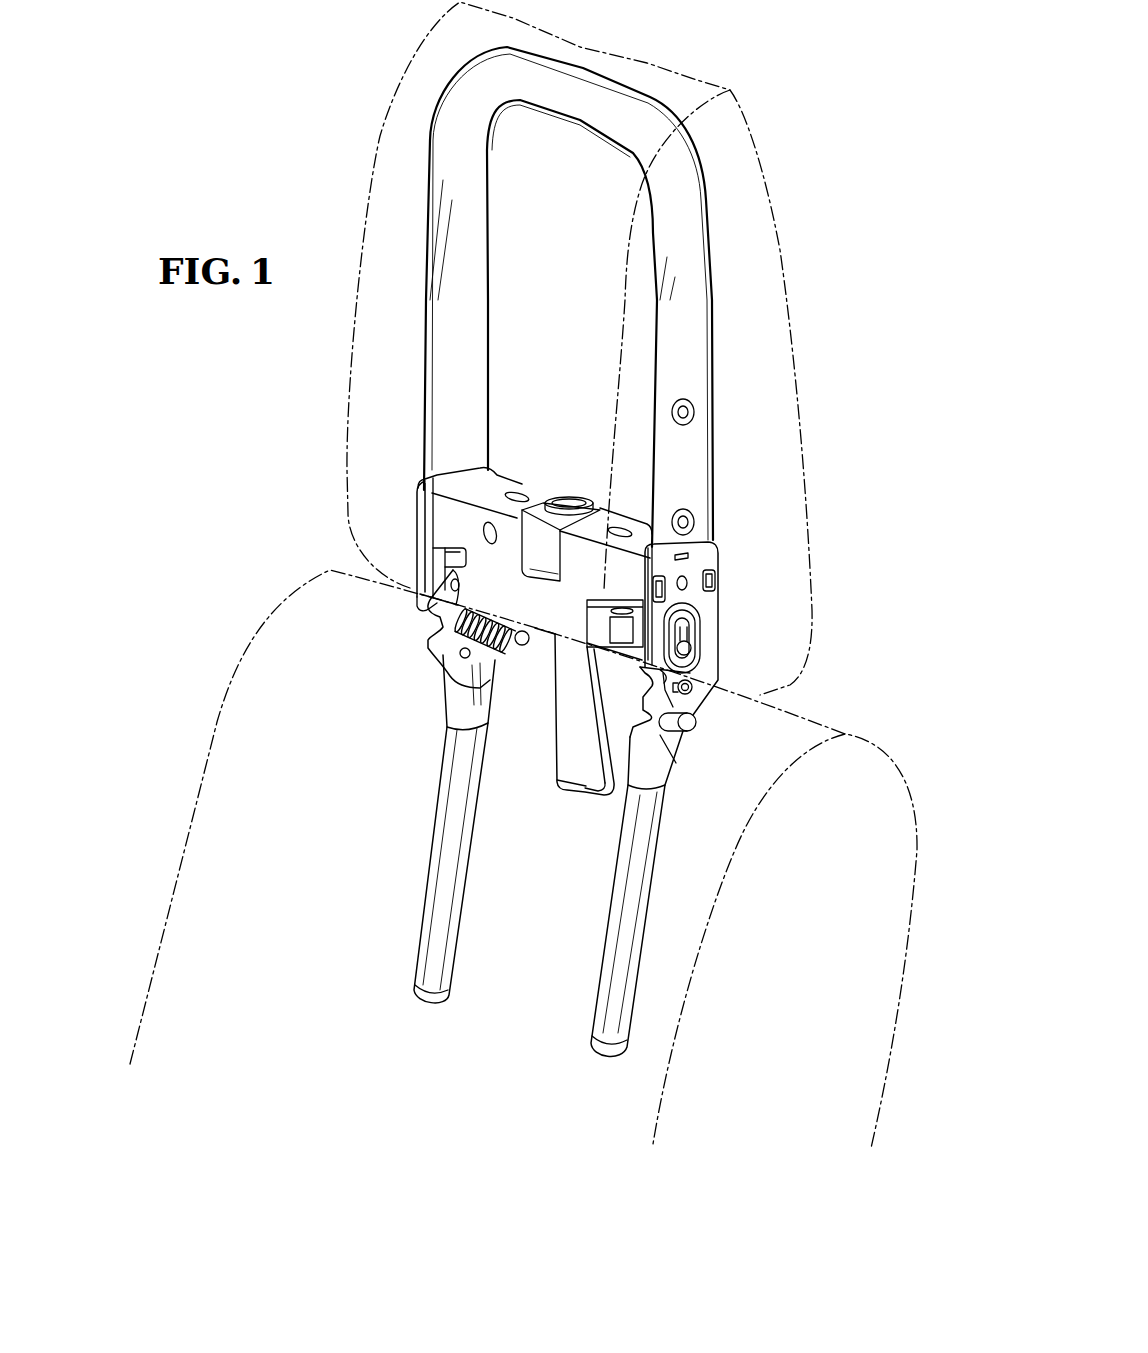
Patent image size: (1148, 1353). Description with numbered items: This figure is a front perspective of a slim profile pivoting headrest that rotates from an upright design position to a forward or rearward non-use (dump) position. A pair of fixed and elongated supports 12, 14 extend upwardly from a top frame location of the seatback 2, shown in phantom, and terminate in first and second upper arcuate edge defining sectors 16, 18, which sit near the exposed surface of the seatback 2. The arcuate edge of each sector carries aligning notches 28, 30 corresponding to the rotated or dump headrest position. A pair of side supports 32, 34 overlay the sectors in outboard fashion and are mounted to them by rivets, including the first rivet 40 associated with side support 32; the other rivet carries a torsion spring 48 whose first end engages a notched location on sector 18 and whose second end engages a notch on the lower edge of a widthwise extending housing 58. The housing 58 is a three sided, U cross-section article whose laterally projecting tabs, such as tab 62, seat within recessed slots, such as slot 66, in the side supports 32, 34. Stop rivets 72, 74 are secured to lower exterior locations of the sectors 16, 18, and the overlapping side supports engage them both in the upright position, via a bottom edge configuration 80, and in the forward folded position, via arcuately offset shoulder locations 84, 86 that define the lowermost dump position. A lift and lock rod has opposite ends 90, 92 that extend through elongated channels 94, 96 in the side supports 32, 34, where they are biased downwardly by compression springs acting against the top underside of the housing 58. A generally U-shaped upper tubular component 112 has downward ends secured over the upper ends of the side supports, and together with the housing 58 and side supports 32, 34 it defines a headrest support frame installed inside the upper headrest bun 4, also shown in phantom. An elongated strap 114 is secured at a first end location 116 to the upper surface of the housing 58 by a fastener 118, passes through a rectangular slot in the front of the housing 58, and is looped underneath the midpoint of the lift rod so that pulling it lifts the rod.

The seatback 2 is at (198, 792).
The upper headrest bun 4 is at (372, 148).
The fixed elongated support 12 is at (610, 955).
The fixed elongated support 14 is at (437, 907).
The first upper arcuate edge defining sector 16 is at (660, 737).
The second upper arcuate edge defining sector 18 is at (460, 654).
The aligning notch 28 is at (642, 690).
The aligning notch 30 is at (432, 630).
The side support 32 is at (718, 609).
The side support 34 is at (419, 513).
The first rivet 40 is at (693, 689).
The torsion spring 48 is at (503, 652).
The widthwise extending housing 58 is at (497, 487).
The laterally projecting tab 62 is at (656, 592).
The recessed slot 66 is at (653, 578).
The stop rivet 72 is at (692, 725).
The stop rivet 74 is at (447, 658).
The bottom edge configuration 80 is at (697, 724).
The shoulder location 84 is at (690, 674).
The shoulder location 86 is at (420, 602).
The rod end 90 is at (691, 658).
The rod end 92 is at (438, 548).
The elongated channel 94 is at (693, 633).
The elongated channel 96 is at (447, 554).
The upper tubular component 112 is at (577, 82).
The elongated strap 114 is at (563, 757).
The first end location 116 is at (535, 510).
The fastener 118 is at (563, 500).